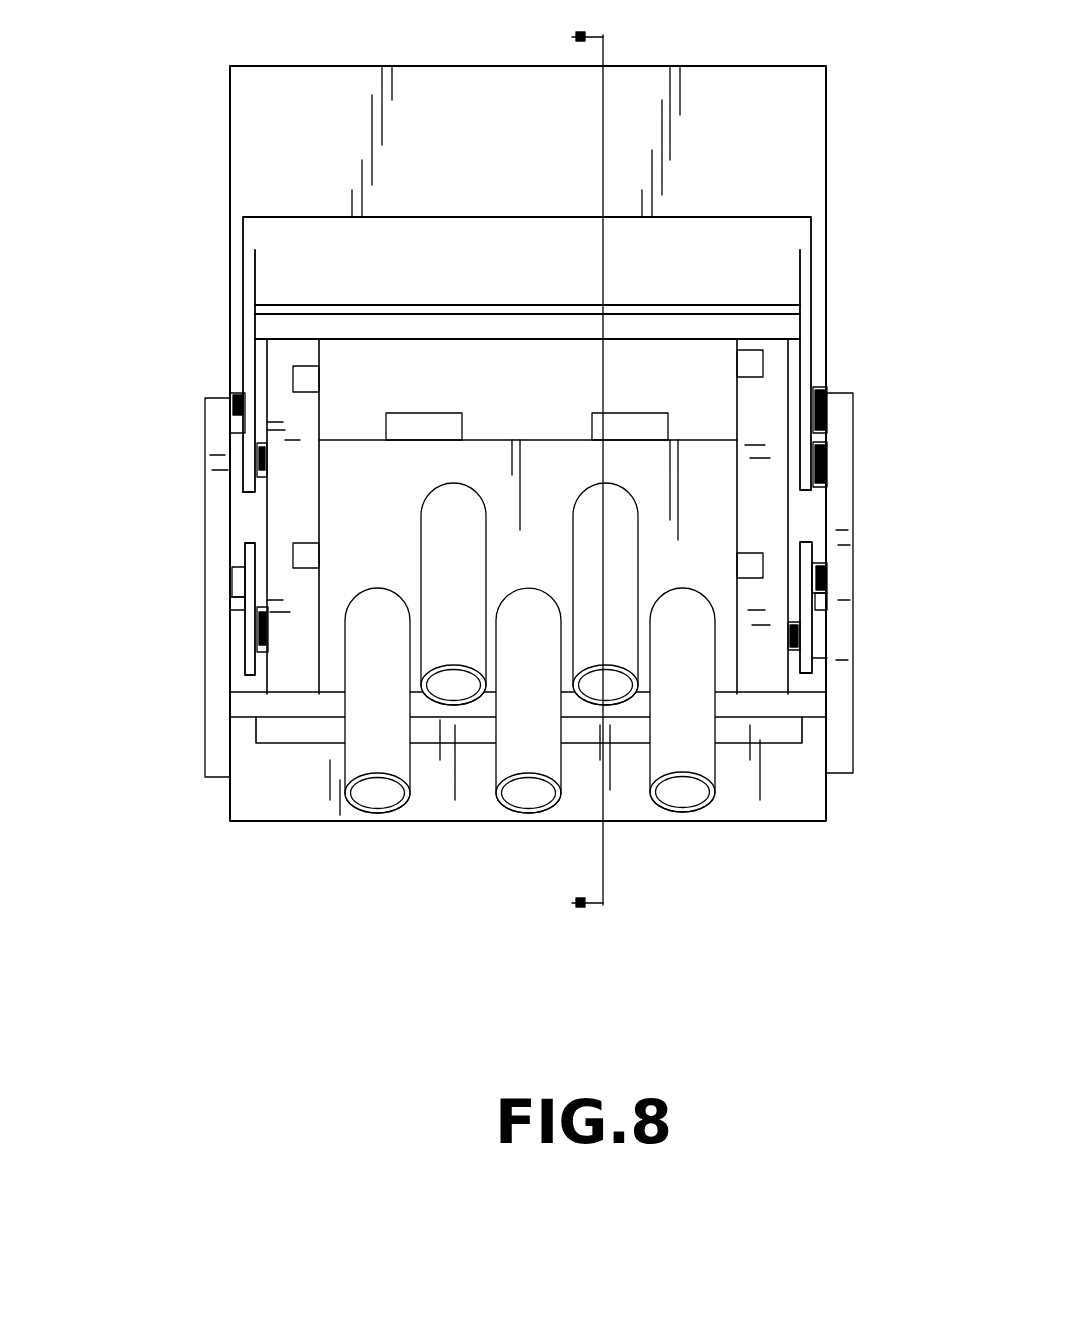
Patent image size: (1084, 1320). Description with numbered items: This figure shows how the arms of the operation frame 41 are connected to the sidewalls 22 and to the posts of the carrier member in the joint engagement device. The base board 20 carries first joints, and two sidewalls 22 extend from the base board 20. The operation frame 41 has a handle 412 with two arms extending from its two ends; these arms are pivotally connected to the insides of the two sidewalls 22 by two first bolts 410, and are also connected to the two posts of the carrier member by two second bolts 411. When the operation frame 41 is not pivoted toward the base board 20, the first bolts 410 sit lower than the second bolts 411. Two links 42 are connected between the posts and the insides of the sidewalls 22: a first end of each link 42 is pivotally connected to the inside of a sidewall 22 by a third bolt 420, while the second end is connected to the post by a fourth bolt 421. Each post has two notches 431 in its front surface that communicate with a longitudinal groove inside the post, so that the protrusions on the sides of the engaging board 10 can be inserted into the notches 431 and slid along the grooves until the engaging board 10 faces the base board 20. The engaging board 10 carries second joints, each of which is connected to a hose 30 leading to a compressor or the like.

The engaging board 10 is at (727, 658).
The base board 20 is at (823, 103).
The sidewalls 22 is at (843, 652).
The hose 30 is at (717, 757).
The operation frame 41 is at (265, 192).
The first bolts 410 is at (255, 461).
The second bolts 411 is at (232, 395).
The handle 412 is at (783, 268).
The links 42 is at (250, 625).
The third bolt 420 is at (262, 640).
The fourth bolt 421 is at (262, 573).
The notches 431 is at (312, 562).